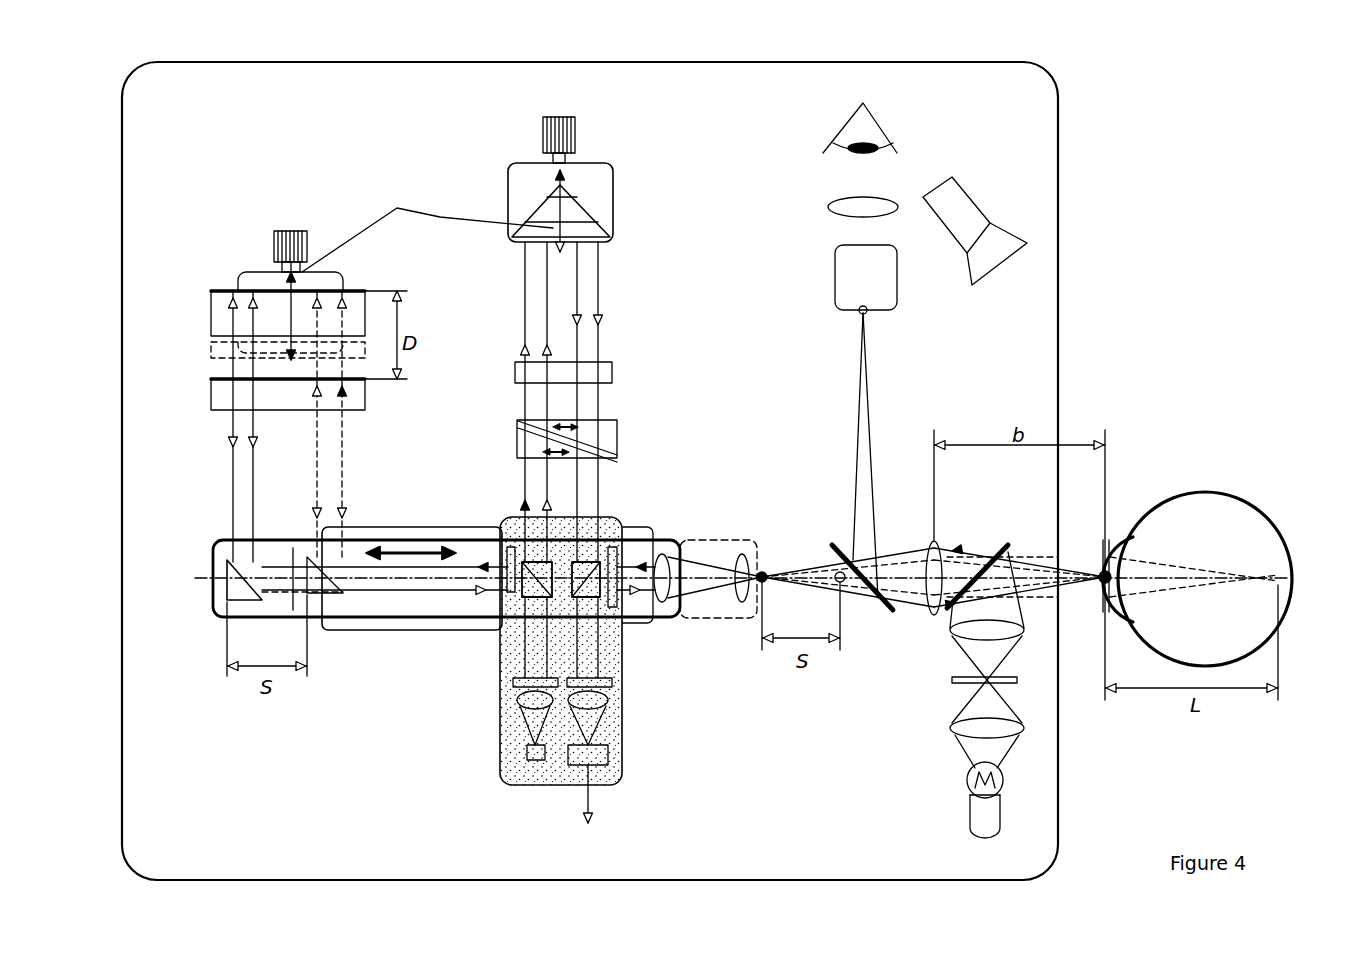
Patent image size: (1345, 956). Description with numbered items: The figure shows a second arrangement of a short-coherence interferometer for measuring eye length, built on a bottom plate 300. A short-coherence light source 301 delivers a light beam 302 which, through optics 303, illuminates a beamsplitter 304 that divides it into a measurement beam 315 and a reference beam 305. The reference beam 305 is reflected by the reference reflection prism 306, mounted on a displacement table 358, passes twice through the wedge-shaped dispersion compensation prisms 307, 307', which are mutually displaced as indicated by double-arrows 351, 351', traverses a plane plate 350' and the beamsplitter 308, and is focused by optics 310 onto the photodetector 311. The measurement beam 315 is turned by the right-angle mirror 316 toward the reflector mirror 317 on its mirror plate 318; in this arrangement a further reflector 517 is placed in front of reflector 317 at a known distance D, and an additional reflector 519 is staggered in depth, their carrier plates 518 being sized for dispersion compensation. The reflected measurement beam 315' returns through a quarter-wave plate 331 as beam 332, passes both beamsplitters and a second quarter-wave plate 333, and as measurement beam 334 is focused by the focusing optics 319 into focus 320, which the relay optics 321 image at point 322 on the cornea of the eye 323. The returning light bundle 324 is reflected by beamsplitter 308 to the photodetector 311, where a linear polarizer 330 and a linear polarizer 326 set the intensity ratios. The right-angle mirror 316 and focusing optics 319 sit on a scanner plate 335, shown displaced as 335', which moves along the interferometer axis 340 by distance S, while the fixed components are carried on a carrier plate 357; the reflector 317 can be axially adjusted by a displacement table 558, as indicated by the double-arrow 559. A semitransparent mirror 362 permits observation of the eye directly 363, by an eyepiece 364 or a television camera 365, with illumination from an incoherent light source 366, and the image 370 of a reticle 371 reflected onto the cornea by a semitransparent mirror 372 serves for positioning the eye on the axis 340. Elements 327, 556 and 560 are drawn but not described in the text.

The plate 300 is at (1045, 108).
The short-coherence light source 301 is at (523, 758).
The light beam 302 is at (527, 744).
The optics 303 is at (537, 722).
The beamsplitter 304 is at (512, 604).
The reference beam 305 is at (530, 487).
The reference reflection prism 306 is at (528, 222).
The dispersion compensation prism 307 is at (541, 435).
The dispersion compensation prism 307' is at (599, 443).
The beamsplitter 308 is at (612, 548).
The optics 310 is at (608, 705).
The photodetector 311 is at (608, 758).
The measurement beam 315 is at (385, 613).
The reflected measurement beam 315' is at (247, 426).
The right-angle mirror 316 is at (240, 600).
The reflector mirror 317 is at (272, 289).
The mirror plate 318 is at (234, 291).
The focusing optics 319 is at (670, 565).
The focus 320 is at (766, 572).
The relay optics 321 is at (934, 540).
The point 322 is at (1114, 540).
The eye 323 is at (1218, 508).
The returning measurement light bundle 324 is at (953, 550).
The linear polarizer 326 is at (612, 684).
The mirror 327 is at (843, 545).
The linear polarizer 330 is at (514, 683).
The quarter-wave plate 331 is at (522, 560).
The beam 332 is at (548, 545).
The quarter-wave plate 333 is at (620, 630).
The measurement beam 334 is at (638, 566).
The scanner plate 335 is at (414, 583).
The scanner plate 335' is at (718, 609).
The interferometer axis 340 is at (213, 578).
The plane plate 350' is at (597, 361).
The double-arrow 351 is at (608, 464).
The double-arrow 351' is at (599, 418).
The carrier plate 357 is at (515, 785).
The displacement table 358 is at (603, 185).
The semitransparent mirror 362 is at (888, 596).
The direct observation 363 is at (836, 142).
The eyepiece 364 is at (829, 207).
The television camera 365 is at (836, 272).
The incoherent light source 366 is at (953, 215).
The image 370 is at (1100, 548).
The reticle 371 is at (1018, 684).
The semitransparent mirror 372 is at (1008, 543).
The reflector 519 is at (212, 337).
The reflector 517 is at (220, 378).
The carrier plate 518 is at (220, 398).
The slider 556 is at (373, 628).
The displacement table 558 is at (273, 232).
The double-arrow 559 is at (427, 229).
The displacement direction 560 is at (404, 551).